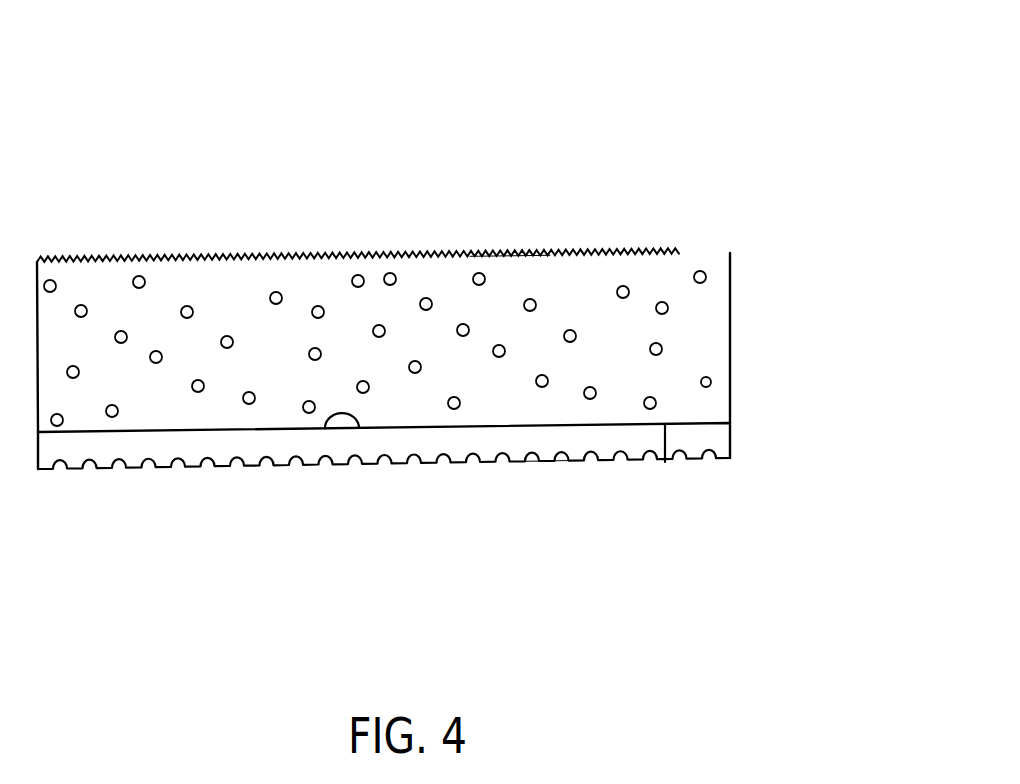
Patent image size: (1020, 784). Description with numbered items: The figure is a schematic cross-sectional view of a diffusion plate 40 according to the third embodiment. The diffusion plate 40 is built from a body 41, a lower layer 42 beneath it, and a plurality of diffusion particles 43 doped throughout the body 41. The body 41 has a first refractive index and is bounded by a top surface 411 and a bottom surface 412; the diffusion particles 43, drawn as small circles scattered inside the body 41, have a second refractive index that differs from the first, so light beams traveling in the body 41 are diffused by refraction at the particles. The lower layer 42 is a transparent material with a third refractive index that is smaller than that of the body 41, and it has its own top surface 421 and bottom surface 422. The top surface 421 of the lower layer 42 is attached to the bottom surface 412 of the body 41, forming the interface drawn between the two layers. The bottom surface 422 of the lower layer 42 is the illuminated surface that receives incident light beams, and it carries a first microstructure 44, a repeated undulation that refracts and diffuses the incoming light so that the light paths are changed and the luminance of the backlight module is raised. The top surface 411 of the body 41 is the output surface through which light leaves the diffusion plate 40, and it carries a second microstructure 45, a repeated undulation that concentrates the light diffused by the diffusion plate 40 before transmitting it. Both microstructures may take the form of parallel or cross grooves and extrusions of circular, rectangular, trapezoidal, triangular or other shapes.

The diffusion plate 40 is at (757, 130).
The body 41 is at (707, 320).
The top surface 411 is at (545, 255).
The bottom surface 412 is at (665, 462).
The lower layer 42 is at (708, 443).
The top surface 421 is at (326, 430).
The bottom surface 422 is at (540, 462).
The diffusion particles 43 is at (711, 381).
The first microstructure 44 is at (557, 453).
The second microstructure 45 is at (510, 255).